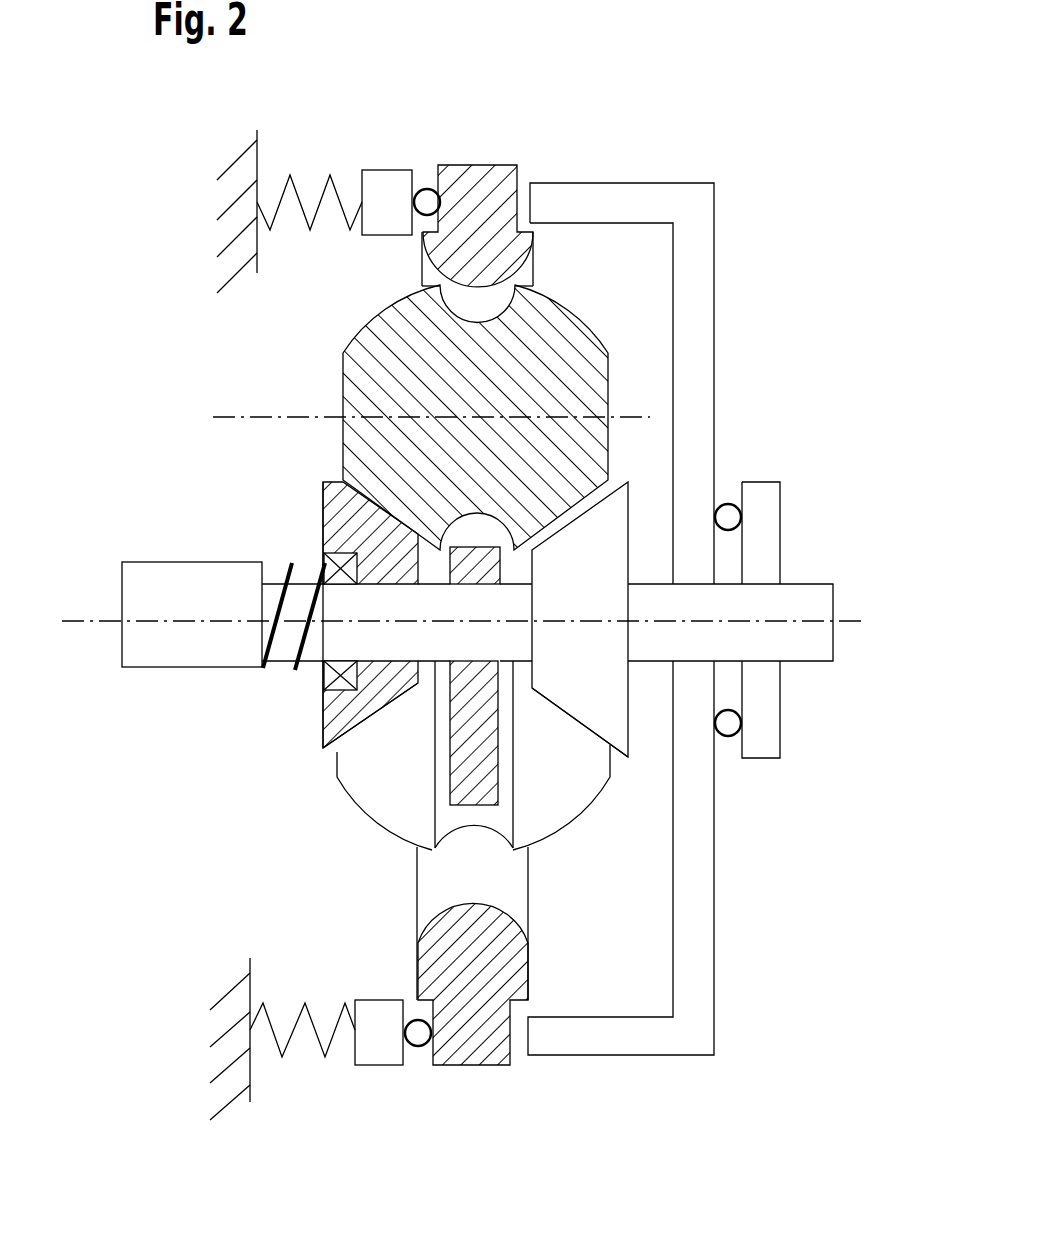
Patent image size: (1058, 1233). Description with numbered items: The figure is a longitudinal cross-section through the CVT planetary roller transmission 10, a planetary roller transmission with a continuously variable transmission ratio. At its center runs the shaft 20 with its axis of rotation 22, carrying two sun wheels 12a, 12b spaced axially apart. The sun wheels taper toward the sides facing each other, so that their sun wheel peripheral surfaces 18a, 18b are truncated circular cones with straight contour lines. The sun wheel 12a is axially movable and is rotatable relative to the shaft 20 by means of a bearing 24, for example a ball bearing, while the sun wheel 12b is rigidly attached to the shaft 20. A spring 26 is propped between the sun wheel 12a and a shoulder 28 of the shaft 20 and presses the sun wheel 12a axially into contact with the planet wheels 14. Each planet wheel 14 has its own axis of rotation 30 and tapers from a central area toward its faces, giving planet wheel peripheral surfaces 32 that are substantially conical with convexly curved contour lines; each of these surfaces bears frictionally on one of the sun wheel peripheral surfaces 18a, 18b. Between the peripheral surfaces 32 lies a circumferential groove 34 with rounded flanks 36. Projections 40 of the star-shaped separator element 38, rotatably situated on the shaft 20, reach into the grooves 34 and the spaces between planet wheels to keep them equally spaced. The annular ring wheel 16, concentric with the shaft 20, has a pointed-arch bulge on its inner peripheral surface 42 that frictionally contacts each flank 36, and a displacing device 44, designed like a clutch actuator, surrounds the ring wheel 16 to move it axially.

The planetary transmission 10 is at (745, 171).
The sun wheel 12a is at (300, 629).
The sun wheel 12b is at (597, 655).
The planet wheel 14 is at (448, 412).
The ring wheel 16 is at (481, 155).
The sun wheel peripheral surface 18a is at (348, 740).
The sun wheel peripheral surface 18b is at (562, 724).
The shaft 20 is at (818, 603).
The axis of rotation 22 is at (72, 624).
The bearing 24 is at (322, 578).
The spring 26 is at (292, 576).
The shoulder 28 is at (122, 592).
The axis of rotation 30 is at (232, 405).
The planet wheel peripheral surface 32 is at (343, 343).
The circumferential groove 34 is at (476, 828).
The rounded flank 36 is at (445, 852).
The star-shaped separator element 38 is at (428, 704).
The projection 40 is at (460, 787).
The inner peripheral surface 42 is at (438, 907).
The displacing device 44 is at (772, 500).